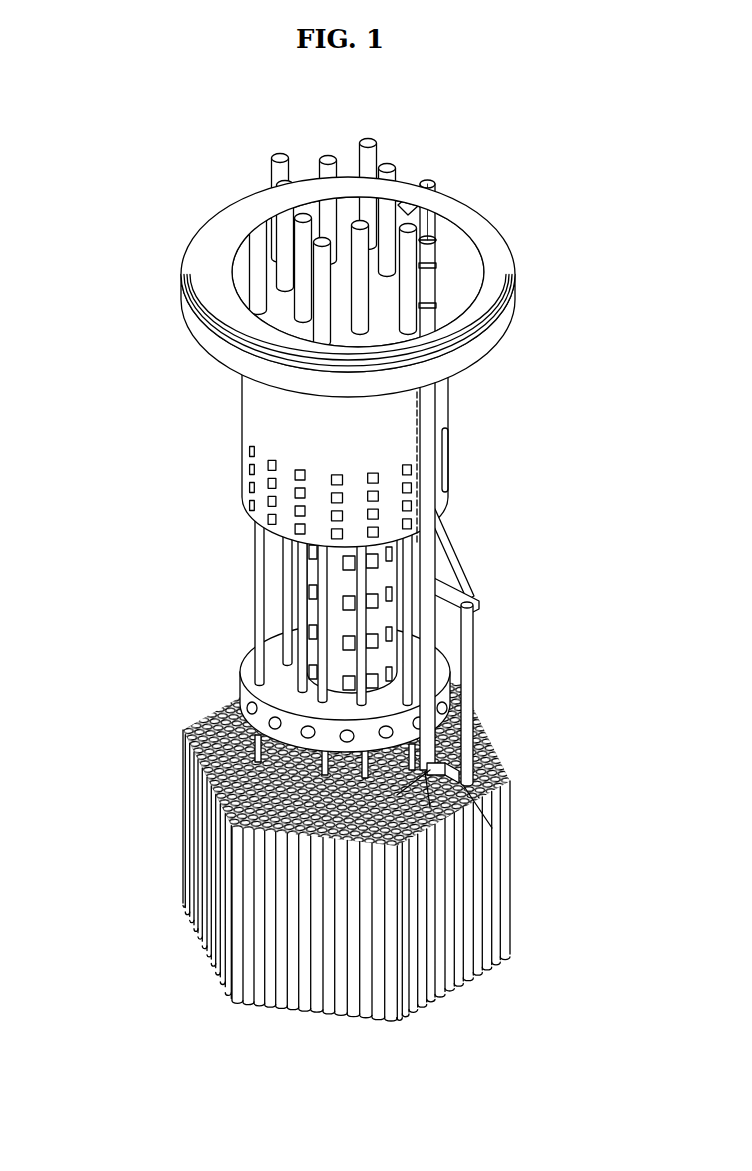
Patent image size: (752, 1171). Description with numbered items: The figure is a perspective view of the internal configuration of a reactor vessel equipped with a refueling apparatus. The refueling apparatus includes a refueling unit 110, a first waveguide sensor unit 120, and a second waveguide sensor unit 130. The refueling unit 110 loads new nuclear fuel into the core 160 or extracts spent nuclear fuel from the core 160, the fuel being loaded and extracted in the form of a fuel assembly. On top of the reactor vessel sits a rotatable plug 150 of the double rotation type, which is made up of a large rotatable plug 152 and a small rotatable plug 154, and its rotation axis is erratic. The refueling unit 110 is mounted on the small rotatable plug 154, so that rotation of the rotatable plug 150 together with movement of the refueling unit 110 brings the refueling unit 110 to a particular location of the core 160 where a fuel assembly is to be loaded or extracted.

The refueling unit 110 is at (443, 411).
The first waveguide sensor unit 120 is at (501, 807).
The second waveguide sensor unit 130 is at (449, 774).
The rotatable plug 150 is at (170, 333).
The large rotatable plug 152 is at (210, 222).
The small rotatable plug 154 is at (507, 263).
The core 160 is at (235, 868).